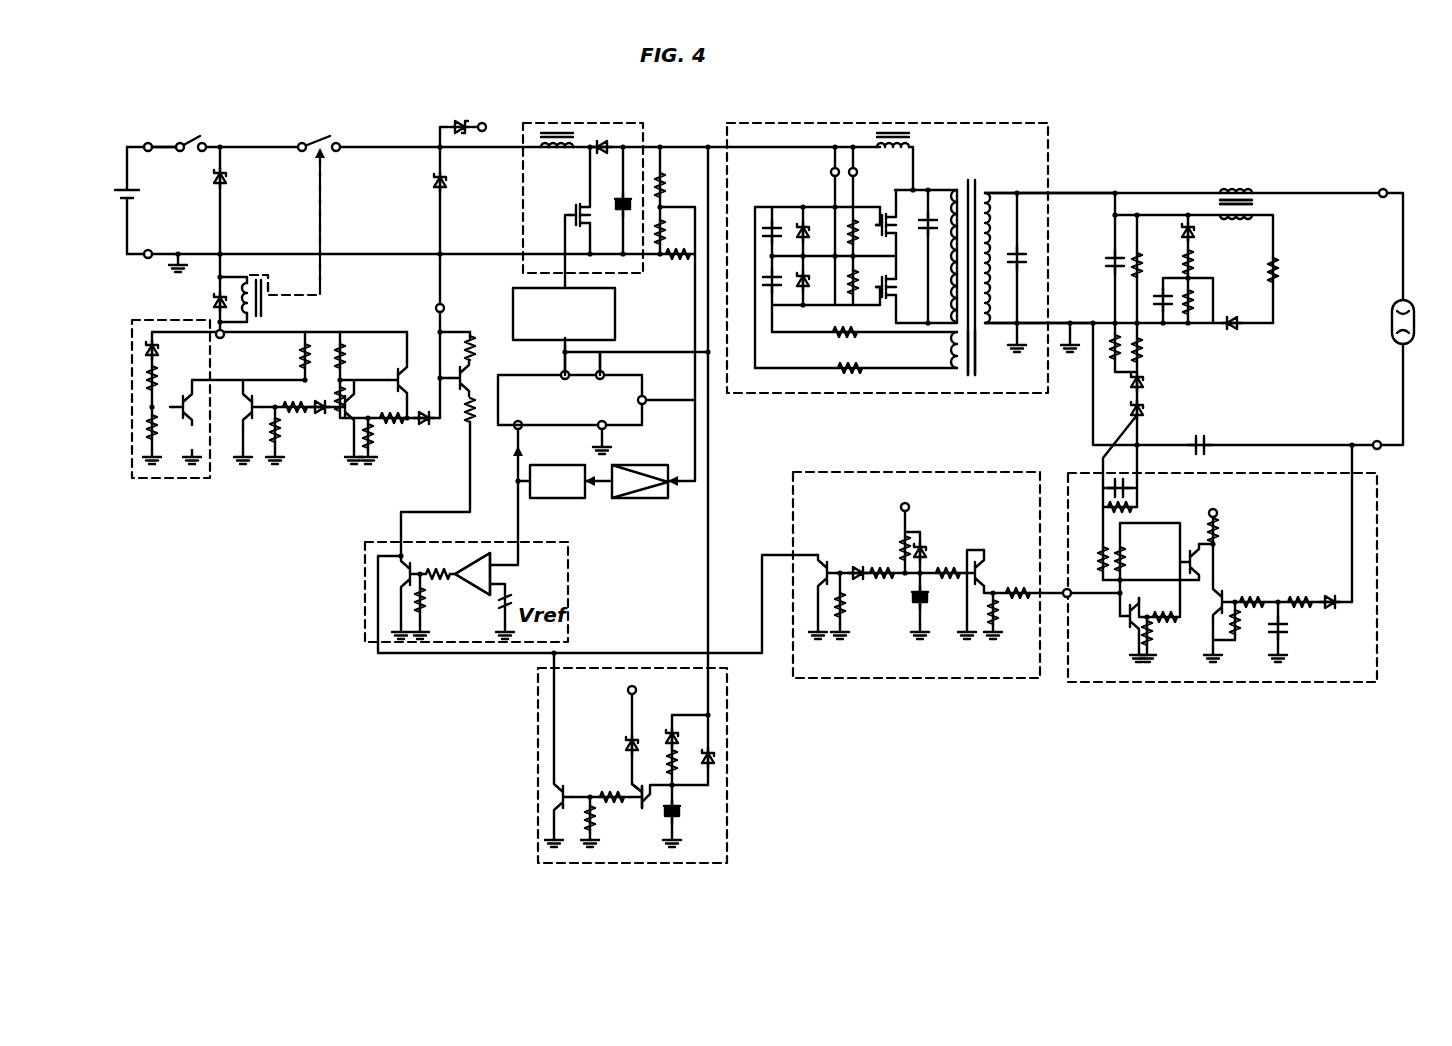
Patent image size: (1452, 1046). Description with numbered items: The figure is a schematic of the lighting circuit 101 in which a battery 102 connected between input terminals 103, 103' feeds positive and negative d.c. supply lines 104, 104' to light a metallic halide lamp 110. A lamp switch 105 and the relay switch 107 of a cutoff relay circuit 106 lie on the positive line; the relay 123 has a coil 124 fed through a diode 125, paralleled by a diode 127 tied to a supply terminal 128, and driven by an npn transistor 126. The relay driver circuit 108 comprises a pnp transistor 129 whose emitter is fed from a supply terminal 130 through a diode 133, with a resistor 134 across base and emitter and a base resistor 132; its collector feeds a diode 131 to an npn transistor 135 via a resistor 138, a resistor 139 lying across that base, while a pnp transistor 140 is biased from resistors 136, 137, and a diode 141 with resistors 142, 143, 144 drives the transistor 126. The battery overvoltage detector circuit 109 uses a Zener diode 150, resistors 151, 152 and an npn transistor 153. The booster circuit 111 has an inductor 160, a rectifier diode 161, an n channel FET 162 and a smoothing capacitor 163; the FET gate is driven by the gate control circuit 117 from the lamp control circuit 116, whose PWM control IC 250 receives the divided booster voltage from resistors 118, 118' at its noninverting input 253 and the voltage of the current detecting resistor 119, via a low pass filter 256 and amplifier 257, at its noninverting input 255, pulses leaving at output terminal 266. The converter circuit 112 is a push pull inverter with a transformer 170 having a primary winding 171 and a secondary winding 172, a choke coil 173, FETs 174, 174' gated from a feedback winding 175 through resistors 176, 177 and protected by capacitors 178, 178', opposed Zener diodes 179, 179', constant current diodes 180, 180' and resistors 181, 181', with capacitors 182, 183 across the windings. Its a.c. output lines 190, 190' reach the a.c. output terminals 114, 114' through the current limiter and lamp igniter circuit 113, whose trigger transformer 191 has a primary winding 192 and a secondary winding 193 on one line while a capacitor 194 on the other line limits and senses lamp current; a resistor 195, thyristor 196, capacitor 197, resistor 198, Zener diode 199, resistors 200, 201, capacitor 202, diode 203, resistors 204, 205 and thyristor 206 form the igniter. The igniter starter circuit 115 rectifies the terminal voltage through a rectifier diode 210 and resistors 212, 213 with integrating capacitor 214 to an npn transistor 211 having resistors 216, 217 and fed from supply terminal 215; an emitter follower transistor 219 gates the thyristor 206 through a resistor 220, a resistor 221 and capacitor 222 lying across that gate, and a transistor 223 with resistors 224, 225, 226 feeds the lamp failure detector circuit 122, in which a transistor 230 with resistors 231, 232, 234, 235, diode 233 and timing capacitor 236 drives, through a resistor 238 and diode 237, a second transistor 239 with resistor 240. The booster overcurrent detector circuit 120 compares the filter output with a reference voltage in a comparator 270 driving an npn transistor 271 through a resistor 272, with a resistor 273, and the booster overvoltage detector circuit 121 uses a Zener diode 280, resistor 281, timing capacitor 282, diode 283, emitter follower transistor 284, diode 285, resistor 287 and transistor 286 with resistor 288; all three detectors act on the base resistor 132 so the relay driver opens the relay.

The lighting circuit 101 is at (1180, 100).
The battery 102 is at (124, 187).
The input terminal 103 is at (126, 126).
The input terminal 103' is at (141, 278).
The positive d.c. supply line 104 is at (164, 114).
The negative d.c. supply line 104' is at (191, 234).
The lamp switch 105 is at (198, 140).
The cutoff relay circuit 106 is at (321, 268).
The relay switch 107 is at (323, 140).
The relay driver circuit 108 is at (330, 490).
The battery overvoltage detector circuit 109 is at (183, 478).
The metallic halide lamp 110 is at (1390, 322).
The d.c. voltage booster circuit 111 is at (590, 122).
The d.c. to a.c. converter circuit 112 is at (1000, 122).
The current limiter and lamp igniter circuit 113 is at (1262, 178).
The a.c. output terminal 114 is at (1393, 169).
The a.c. output terminal 114' is at (1377, 421).
The igniter starter circuit 115 is at (1280, 682).
The lamp control circuit 116 is at (520, 362).
The gate control circuit 117 is at (616, 322).
The voltage dividing resistor 118 is at (684, 190).
The voltage dividing resistor 118' is at (684, 238).
The resistor 119 is at (680, 262).
The booster overcurrent detector circuit 120 is at (365, 608).
The booster overvoltage detector circuit 121 is at (538, 712).
The lamp failure detector circuit 122 is at (985, 470).
The relay 123 is at (261, 311).
The relay coil 124 is at (252, 281).
The diode 125 is at (226, 178).
The npn transistor 126 is at (245, 440).
The diode 127 is at (214, 302).
The supply terminal 128 is at (221, 338).
The pnp transistor 129 is at (426, 422).
The supply terminal 130 is at (908, 508).
The diode 131 is at (455, 385).
The resistor 132 is at (471, 420).
The diode 133 is at (447, 182).
The resistor 134 is at (472, 342).
The npn transistor 135 is at (380, 418).
The resistor 136 is at (344, 352).
The resistor 137 is at (344, 395).
The resistor 138 is at (370, 430).
The resistor 139 is at (354, 440).
The pnp transistor 140 is at (400, 360).
The diode 141 is at (320, 412).
The resistor 142 is at (295, 410).
The resistor 143 is at (278, 440).
The resistor 144 is at (298, 357).
The Zener diode 150 is at (156, 350).
The resistor 151 is at (150, 375).
The resistor 152 is at (180, 430).
The npn transistor 153 is at (156, 430).
The inductor 160 is at (552, 150).
The rectifier diode 161 is at (603, 150).
The n channel FET 162 is at (568, 210).
The smoothing capacitor 163 is at (618, 212).
The transformer 170 is at (978, 194).
The primary winding 171 is at (966, 185).
The secondary winding 172 is at (976, 335).
The choke coil 173 is at (905, 143).
The FET 174 is at (888, 201).
The FET 174' is at (910, 316).
The feedback winding 175 is at (955, 355).
The resistor 176 is at (845, 372).
The resistor 177 is at (847, 336).
The capacitor 178 is at (757, 208).
The capacitor 178' is at (794, 316).
The opposed Zener diodes 179 is at (806, 207).
The opposed Zener diodes 179' is at (835, 302).
The constant current diode 180 is at (835, 133).
The constant current diode 180' is at (804, 161).
The resistor 181 is at (876, 240).
The resistor 181' is at (879, 279).
The capacitor 182 is at (926, 215).
The capacitor 183 is at (1025, 258).
The a.c. output line 190 is at (1051, 170).
The a.c. output line 190' is at (1045, 294).
The trigger transformer 191 is at (1278, 210).
The primary winding 192 is at (1255, 220).
The secondary winding 193 is at (1228, 190).
The capacitor 194 is at (1208, 444).
The resistor 195 is at (1277, 272).
The thyristor 196 is at (1238, 326).
The capacitor 197 is at (1110, 262).
The resistor 198 is at (1140, 262).
The Zener diode 199 is at (1192, 233).
The resistor 200 is at (1192, 262).
The resistor 201 is at (1192, 310).
The capacitor 202 is at (1163, 290).
The diode 203 is at (1142, 382).
The resistor 204 is at (1110, 345).
The resistor 205 is at (1142, 350).
The thyristor 206 is at (1142, 410).
The rectifier diode 210 is at (1330, 596).
The npn transistor 211 is at (1226, 595).
The resistor 212 is at (1300, 606).
The resistor 213 is at (1255, 595).
The capacitor 214 is at (1282, 632).
The supply terminal 215 is at (628, 690).
The resistor 216 is at (1218, 540).
The resistor 217 is at (1237, 632).
The npn transistor 219 is at (1188, 562).
The resistor 220 is at (1100, 575).
The resistor 221 is at (1137, 507).
The capacitor 222 is at (1140, 488).
The npn transistor 223 is at (1165, 614).
The resistor 224 is at (1150, 638).
The resistor 225 is at (1124, 558).
The resistor 226 is at (1135, 632).
The npn transistor 230 is at (984, 590).
The resistor 231 is at (1018, 590).
The resistor 232 is at (948, 568).
The diode 233 is at (922, 552).
The resistor 234 is at (996, 622).
The resistor 235 is at (903, 545).
The timing capacitor 236 is at (918, 605).
The second diode 237 is at (855, 568).
The resistor 238 is at (880, 568).
The second npn transistor 239 is at (826, 560).
The resistor 240 is at (845, 602).
The PWM control circuit 250 is at (560, 428).
The noninverting input 253 is at (645, 404).
The noninverting input 255 is at (515, 455).
The low pass filter 256 is at (568, 498).
The amplifier 257 is at (648, 498).
The output terminal 266 is at (566, 346).
The comparator 270 is at (470, 566).
The npn transistor 271 is at (411, 568).
The resistor 272 is at (440, 580).
The resistor 273 is at (423, 612).
The Zener diode 280 is at (670, 732).
The resistor 281 is at (676, 768).
The timing capacitor 282 is at (676, 820).
The diode 283 is at (712, 758).
The npn emitter follower transistor 284 is at (646, 800).
The diode 285 is at (628, 745).
The npn transistor 286 is at (565, 788).
The resistor 287 is at (608, 792).
The resistor 288 is at (588, 830).